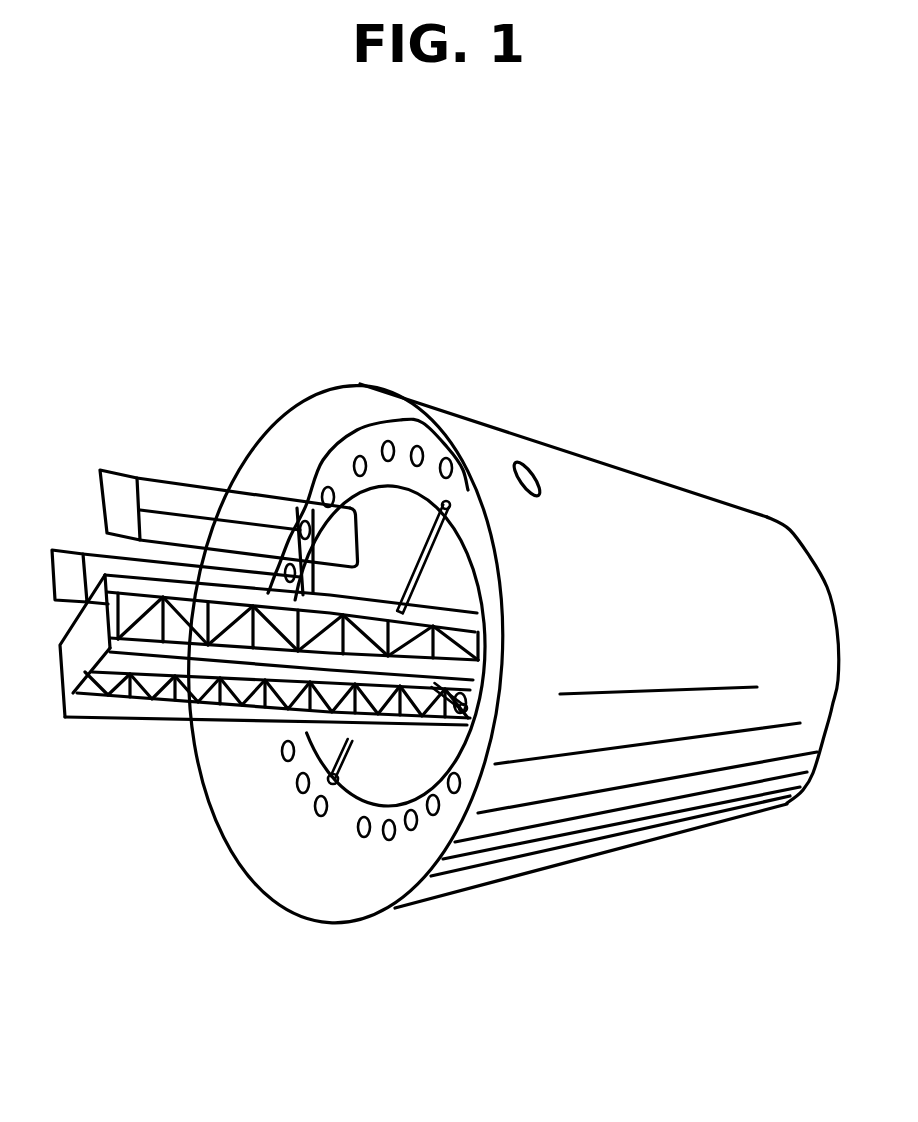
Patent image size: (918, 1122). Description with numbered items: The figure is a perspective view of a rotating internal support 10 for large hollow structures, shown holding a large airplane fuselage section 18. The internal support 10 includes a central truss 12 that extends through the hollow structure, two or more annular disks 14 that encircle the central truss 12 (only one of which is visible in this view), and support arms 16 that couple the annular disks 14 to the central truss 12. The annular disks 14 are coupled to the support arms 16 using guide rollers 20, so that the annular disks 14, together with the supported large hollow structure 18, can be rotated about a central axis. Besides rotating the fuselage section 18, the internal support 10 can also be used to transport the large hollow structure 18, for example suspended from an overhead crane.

The internal support 10 is at (212, 338).
The central truss 12 is at (215, 650).
The annular disk 14 is at (393, 853).
The support arm 16 is at (407, 498).
The large airplane fuselage section 18 is at (752, 748).
The guide roller 20 is at (447, 503).